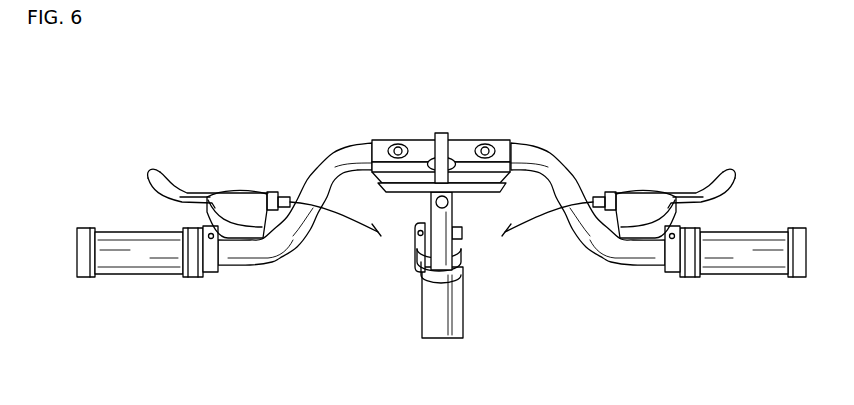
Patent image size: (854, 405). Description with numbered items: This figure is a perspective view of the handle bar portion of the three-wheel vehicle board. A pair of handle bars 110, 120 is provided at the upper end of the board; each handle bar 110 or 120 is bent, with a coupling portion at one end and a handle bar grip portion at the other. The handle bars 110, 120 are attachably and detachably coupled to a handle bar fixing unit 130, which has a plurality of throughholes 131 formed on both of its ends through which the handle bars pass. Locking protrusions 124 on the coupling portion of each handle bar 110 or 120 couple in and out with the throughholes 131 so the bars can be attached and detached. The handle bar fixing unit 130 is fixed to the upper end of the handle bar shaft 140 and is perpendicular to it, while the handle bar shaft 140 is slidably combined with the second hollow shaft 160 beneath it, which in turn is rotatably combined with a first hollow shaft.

The handle bar 110 is at (628, 267).
The handle bar 120 is at (242, 267).
The locking protrusion 124 is at (398, 147).
The handle bar fixing unit 130 is at (466, 145).
The throughhole 131 is at (393, 140).
The handle bar shaft 140 is at (447, 237).
The second hollow shaft 160 is at (433, 322).